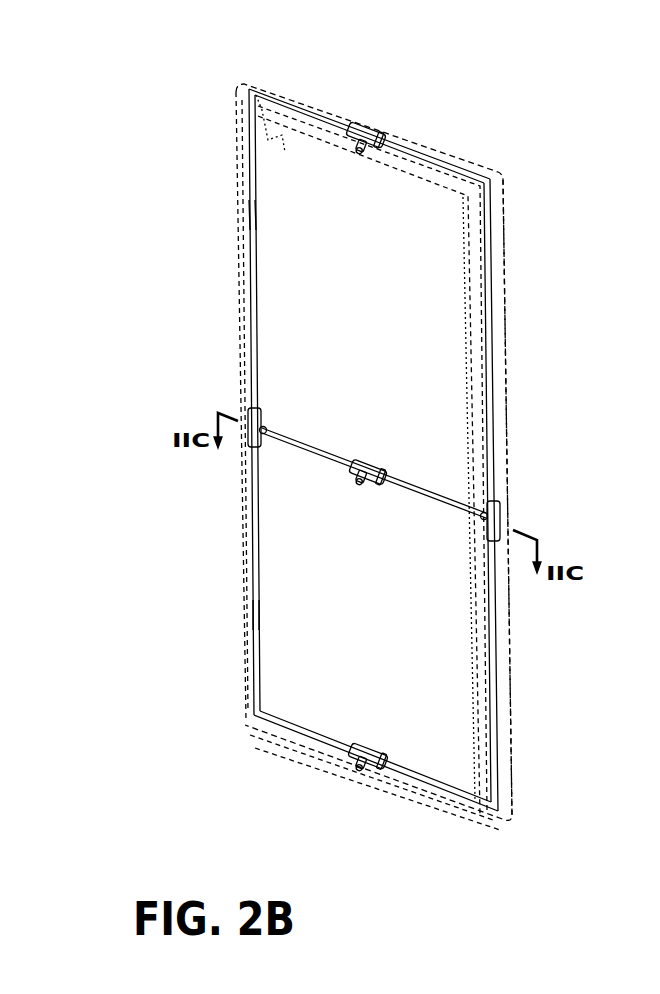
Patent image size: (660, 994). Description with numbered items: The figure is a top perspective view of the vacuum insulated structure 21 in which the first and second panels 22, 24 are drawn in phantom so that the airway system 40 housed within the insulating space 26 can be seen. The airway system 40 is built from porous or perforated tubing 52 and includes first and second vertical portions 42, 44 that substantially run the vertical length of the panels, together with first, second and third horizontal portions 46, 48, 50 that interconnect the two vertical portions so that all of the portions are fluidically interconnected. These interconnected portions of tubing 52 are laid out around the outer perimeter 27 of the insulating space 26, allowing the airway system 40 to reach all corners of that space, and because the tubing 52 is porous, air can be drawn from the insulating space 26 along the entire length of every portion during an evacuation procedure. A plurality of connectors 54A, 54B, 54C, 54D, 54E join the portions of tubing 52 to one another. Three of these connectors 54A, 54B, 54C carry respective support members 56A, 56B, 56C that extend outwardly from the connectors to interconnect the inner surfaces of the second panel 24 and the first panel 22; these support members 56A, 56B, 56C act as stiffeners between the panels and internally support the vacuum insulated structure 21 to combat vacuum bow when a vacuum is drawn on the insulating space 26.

The vacuum insulated structure 21 is at (220, 118).
The first panel 22 is at (278, 100).
The second panel 24 is at (327, 104).
The insulating space 26 is at (404, 250).
The outer perimeter 27 is at (512, 394).
The airway system 40 is at (268, 258).
The first vertical portion 42 is at (256, 201).
The second vertical portion 44 is at (492, 338).
The first horizontal portion 46 is at (339, 123).
The second horizontal portion 48 is at (317, 453).
The third horizontal portion 50 is at (307, 724).
The tubing 52 is at (253, 607).
The connector 54A is at (381, 122).
The connector 54B is at (375, 495).
The connector 54C is at (388, 746).
The connector 54D is at (267, 450).
The connector 54E is at (478, 532).
The support member 56A is at (360, 150).
The support member 56B is at (359, 488).
The support member 56C is at (357, 769).